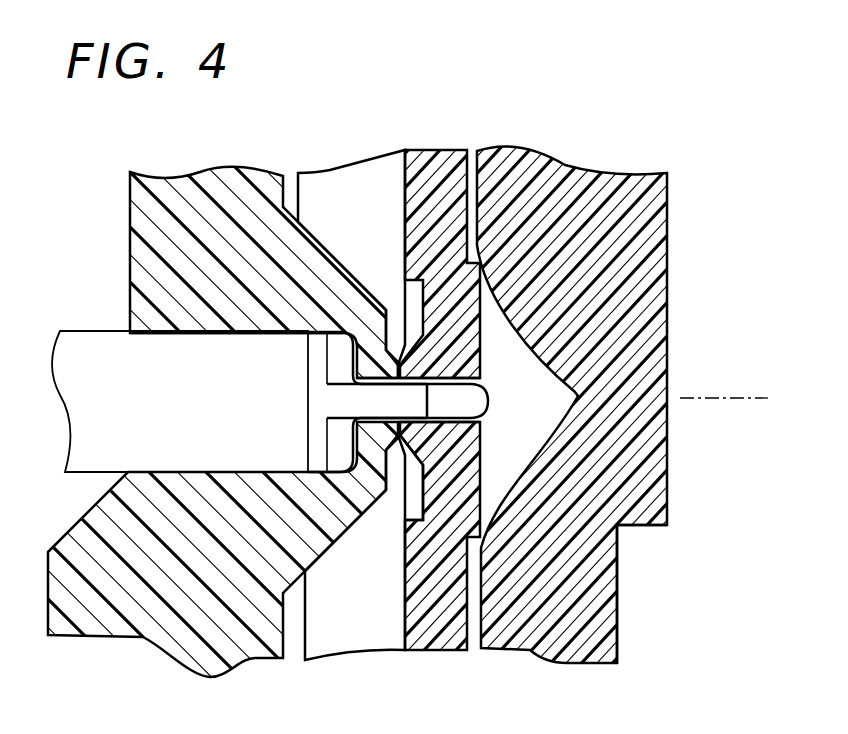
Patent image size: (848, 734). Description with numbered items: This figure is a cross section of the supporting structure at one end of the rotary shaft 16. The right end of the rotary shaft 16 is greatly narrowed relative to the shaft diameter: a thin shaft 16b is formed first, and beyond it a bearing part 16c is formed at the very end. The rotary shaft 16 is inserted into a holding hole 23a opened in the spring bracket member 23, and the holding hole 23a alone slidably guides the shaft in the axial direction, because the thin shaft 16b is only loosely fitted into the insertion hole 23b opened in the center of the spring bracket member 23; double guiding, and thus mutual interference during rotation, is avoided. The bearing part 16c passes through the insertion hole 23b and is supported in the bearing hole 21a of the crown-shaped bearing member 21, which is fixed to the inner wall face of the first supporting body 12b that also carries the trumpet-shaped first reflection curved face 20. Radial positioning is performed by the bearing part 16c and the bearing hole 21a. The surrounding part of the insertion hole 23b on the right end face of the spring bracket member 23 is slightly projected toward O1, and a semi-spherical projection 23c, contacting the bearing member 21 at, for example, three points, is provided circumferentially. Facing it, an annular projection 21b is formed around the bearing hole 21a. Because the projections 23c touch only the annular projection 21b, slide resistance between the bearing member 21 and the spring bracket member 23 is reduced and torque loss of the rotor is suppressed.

The first supporting body 12b is at (617, 562).
The rotary shaft 16 is at (90, 342).
The thin shaft 16b is at (375, 402).
The bearing part 16c is at (480, 413).
The first reflection curved face 20 is at (513, 335).
The bearing member 21 is at (440, 151).
The bearing hole 21a is at (440, 392).
The annular projection 21b is at (403, 448).
The spring bracket member 23 is at (140, 213).
The holding hole 23a is at (307, 335).
The insertion hole 23b is at (365, 385).
The semi-spherical projection 23c is at (392, 350).
The axial direction O1 is at (742, 400).